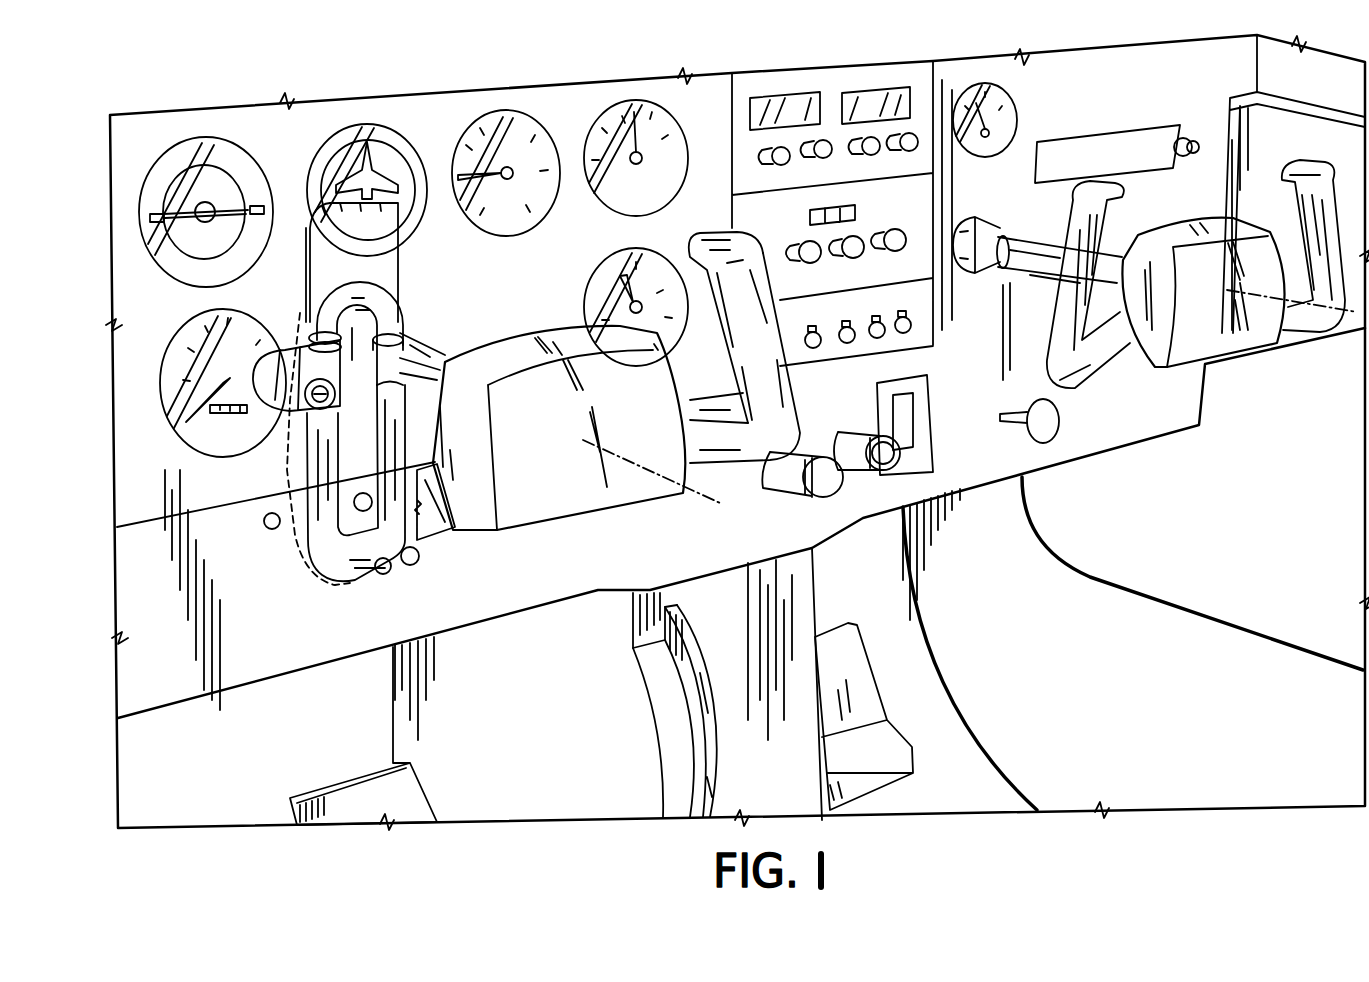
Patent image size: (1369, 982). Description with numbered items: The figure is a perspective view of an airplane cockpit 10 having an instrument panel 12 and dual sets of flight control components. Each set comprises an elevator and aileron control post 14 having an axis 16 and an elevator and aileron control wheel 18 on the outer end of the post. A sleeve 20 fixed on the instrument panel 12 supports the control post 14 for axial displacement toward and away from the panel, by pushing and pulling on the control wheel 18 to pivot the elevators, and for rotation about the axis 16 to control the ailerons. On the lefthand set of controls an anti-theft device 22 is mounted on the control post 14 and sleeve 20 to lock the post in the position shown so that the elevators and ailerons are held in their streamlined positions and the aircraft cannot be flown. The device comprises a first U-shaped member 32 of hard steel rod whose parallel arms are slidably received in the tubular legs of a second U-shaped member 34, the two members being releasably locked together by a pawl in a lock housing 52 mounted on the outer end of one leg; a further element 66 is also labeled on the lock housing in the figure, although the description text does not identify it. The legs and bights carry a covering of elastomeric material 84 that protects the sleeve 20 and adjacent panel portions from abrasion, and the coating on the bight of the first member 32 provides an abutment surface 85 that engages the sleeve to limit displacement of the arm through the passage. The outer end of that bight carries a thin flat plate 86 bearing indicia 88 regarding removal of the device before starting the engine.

The airplane cockpit 10 is at (1200, 806).
The instrument panel 12 is at (422, 107).
The elevator and aileron control post 14 is at (440, 373).
The axis 16 is at (712, 503).
The elevator and aileron control wheel 18 is at (565, 510).
The sleeve 20 is at (370, 357).
The anti-theft device 22 is at (300, 523).
The first U-shaped member 32 is at (408, 294).
The second U-shaped member 34 is at (312, 549).
The lock housing 52 is at (270, 412).
The lock cylinder 66 is at (308, 412).
The covering of elastomeric material 84 is at (360, 570).
The abutment surface 85 is at (410, 323).
The flat plate 86 is at (310, 266).
The indicia 88 is at (400, 244).